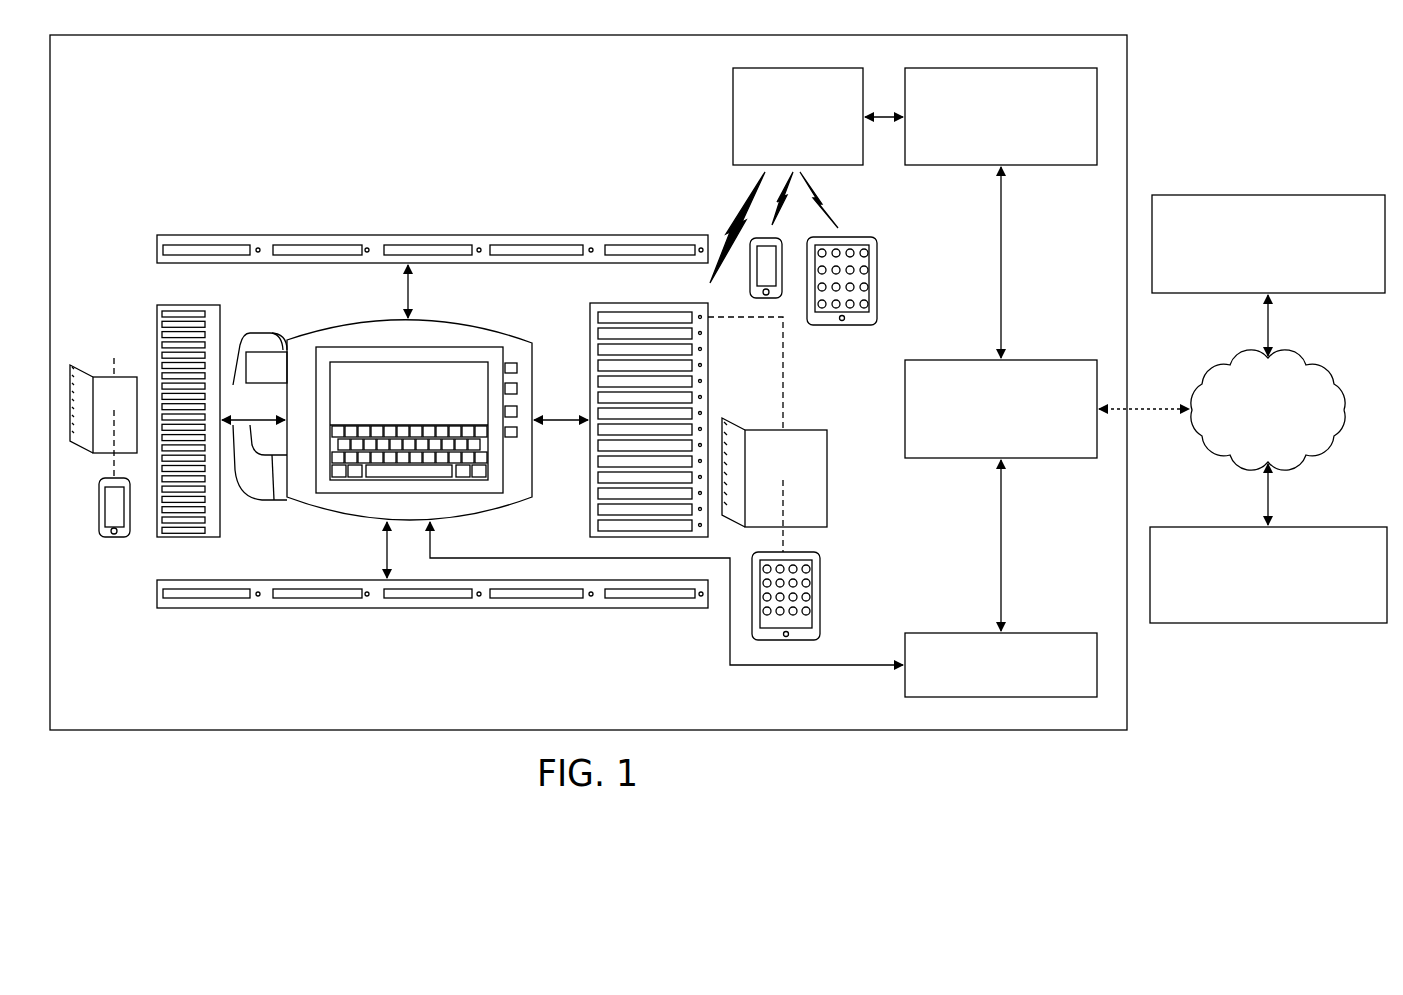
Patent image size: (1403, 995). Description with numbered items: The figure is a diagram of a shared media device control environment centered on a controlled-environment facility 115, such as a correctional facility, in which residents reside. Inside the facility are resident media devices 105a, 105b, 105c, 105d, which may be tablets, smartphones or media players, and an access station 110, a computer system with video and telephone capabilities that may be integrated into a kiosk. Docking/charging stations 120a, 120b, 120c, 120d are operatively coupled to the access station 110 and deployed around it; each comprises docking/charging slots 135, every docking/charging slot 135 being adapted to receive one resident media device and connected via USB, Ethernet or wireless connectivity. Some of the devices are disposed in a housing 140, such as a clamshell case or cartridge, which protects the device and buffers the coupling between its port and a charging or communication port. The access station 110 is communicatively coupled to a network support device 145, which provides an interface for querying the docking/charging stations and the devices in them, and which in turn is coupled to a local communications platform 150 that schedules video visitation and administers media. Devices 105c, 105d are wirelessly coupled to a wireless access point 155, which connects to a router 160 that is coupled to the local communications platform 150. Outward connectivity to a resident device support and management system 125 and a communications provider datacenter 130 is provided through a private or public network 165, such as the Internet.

The resident media device 105a is at (822, 590).
The resident media device 105b is at (114, 539).
The resident media device 105c is at (880, 281).
The resident media device 105d is at (766, 300).
The access station 110 is at (336, 327).
The controlled-environment facility 115 is at (410, 125).
The docking/charging station 120a is at (569, 328).
The docking/charging station 120b is at (431, 216).
The docking/charging station 120c is at (431, 628).
The docking/charging station 120d is at (144, 296).
The resident device support and management system 125 is at (1278, 624).
The communications provider datacenter 130 is at (1278, 195).
The docking/charging slot 135 is at (330, 249).
The housing 140 is at (100, 377).
The network support device 145 is at (1030, 633).
The local communications platform 150 is at (1030, 460).
The wireless access point 155 is at (733, 108).
The router 160 is at (1030, 166).
The network 165 is at (1300, 462).